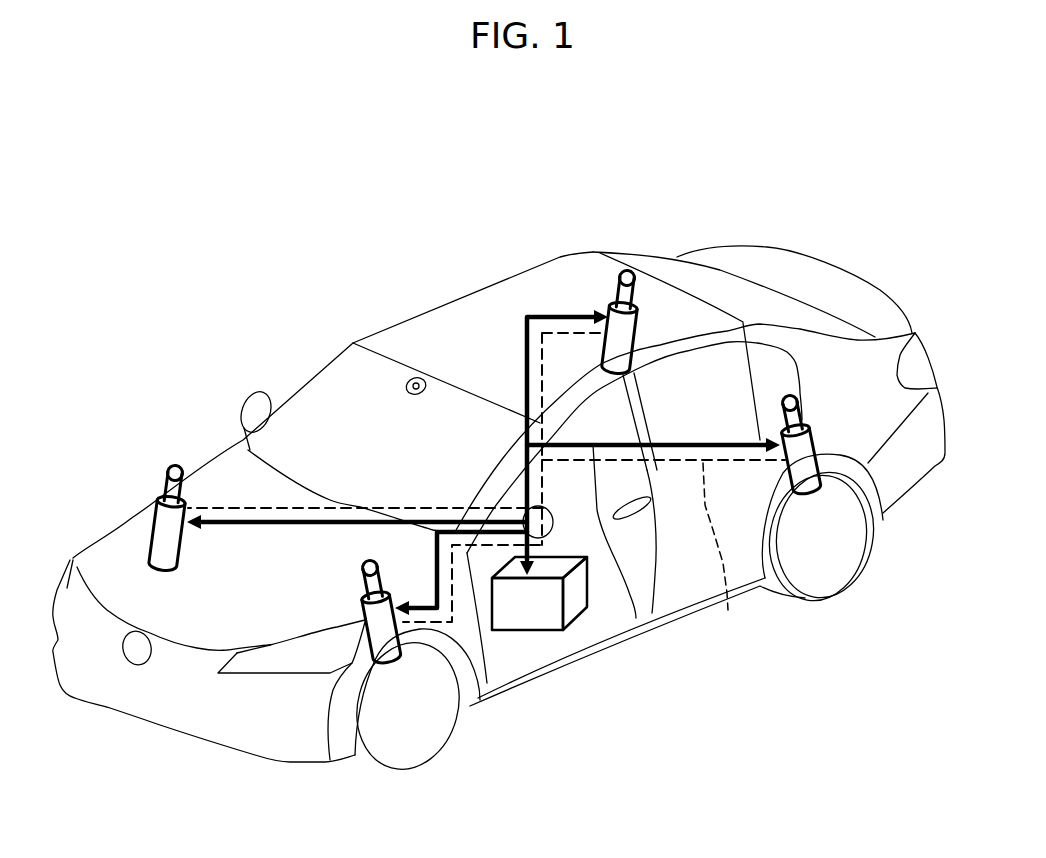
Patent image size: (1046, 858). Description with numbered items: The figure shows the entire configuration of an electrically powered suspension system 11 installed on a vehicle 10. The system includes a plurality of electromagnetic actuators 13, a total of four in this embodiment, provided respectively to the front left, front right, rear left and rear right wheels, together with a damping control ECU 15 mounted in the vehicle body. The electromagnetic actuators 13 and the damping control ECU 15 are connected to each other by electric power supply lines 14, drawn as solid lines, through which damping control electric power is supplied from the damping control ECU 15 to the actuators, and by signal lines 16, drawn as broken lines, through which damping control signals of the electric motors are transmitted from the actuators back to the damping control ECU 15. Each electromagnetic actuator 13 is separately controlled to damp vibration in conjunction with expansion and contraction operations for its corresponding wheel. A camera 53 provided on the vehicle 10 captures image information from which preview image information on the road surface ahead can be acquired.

The vehicle 10 is at (465, 285).
The electrically powered suspension system 11 is at (458, 470).
The electromagnetic actuator 13 is at (148, 540).
The electric power supply line 14 is at (636, 618).
The damping control ECU 15 is at (528, 632).
The signal line 16 is at (728, 610).
The camera 53 is at (427, 386).